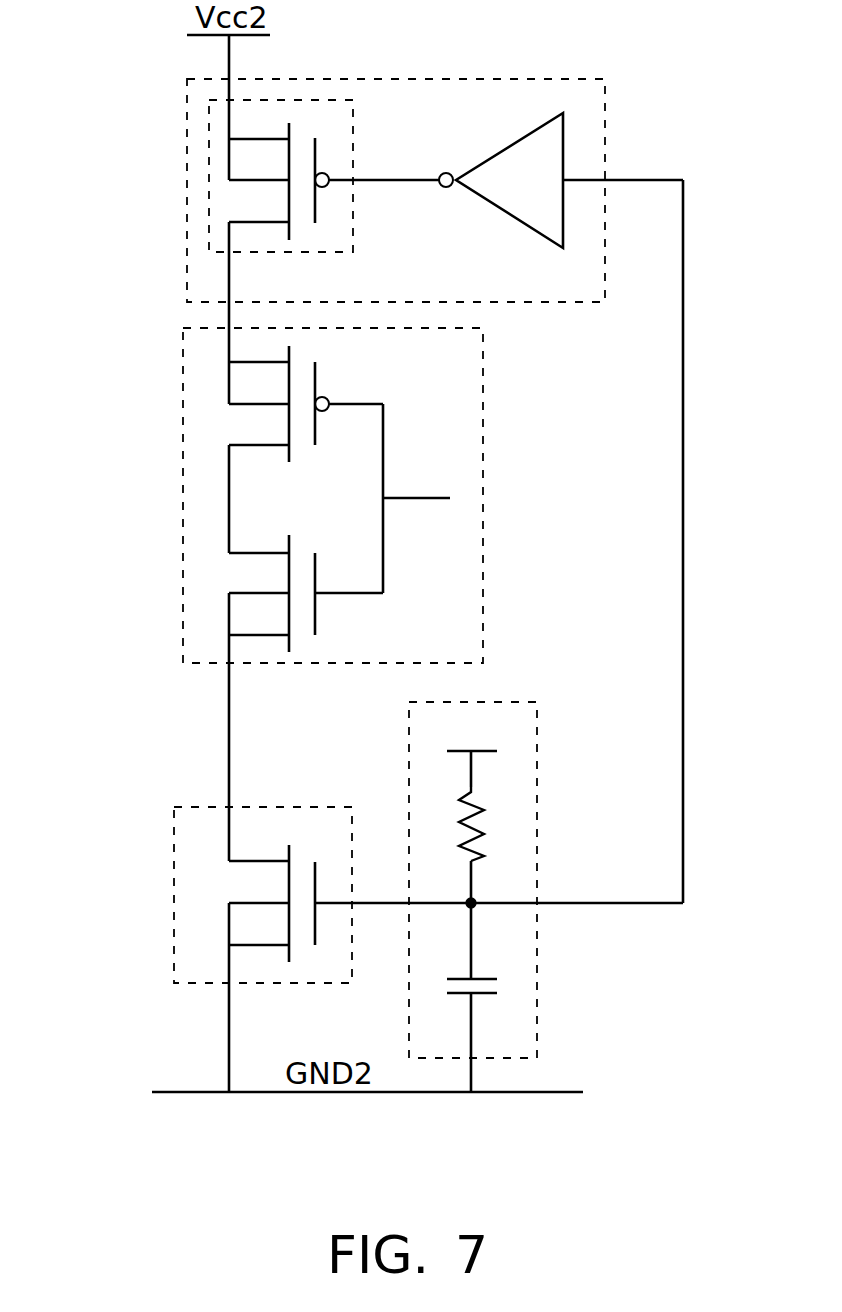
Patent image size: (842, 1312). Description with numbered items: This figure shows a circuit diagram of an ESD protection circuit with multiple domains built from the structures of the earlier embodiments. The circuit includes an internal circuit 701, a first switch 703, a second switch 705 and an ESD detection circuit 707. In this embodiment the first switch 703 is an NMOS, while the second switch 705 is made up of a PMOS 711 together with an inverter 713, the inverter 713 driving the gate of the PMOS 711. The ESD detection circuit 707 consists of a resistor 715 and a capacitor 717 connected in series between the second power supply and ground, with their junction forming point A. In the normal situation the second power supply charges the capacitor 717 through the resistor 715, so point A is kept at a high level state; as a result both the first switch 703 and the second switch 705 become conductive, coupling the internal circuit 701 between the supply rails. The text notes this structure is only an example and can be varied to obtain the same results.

The internal circuit 701 is at (182, 482).
The first switch 703 is at (174, 893).
The second switch 705 is at (187, 203).
The ESD detection circuit 707 is at (525, 897).
The PMOS 711 is at (353, 135).
The inverter 713 is at (508, 217).
The resistor 715 is at (478, 822).
The capacitor 717 is at (485, 977).